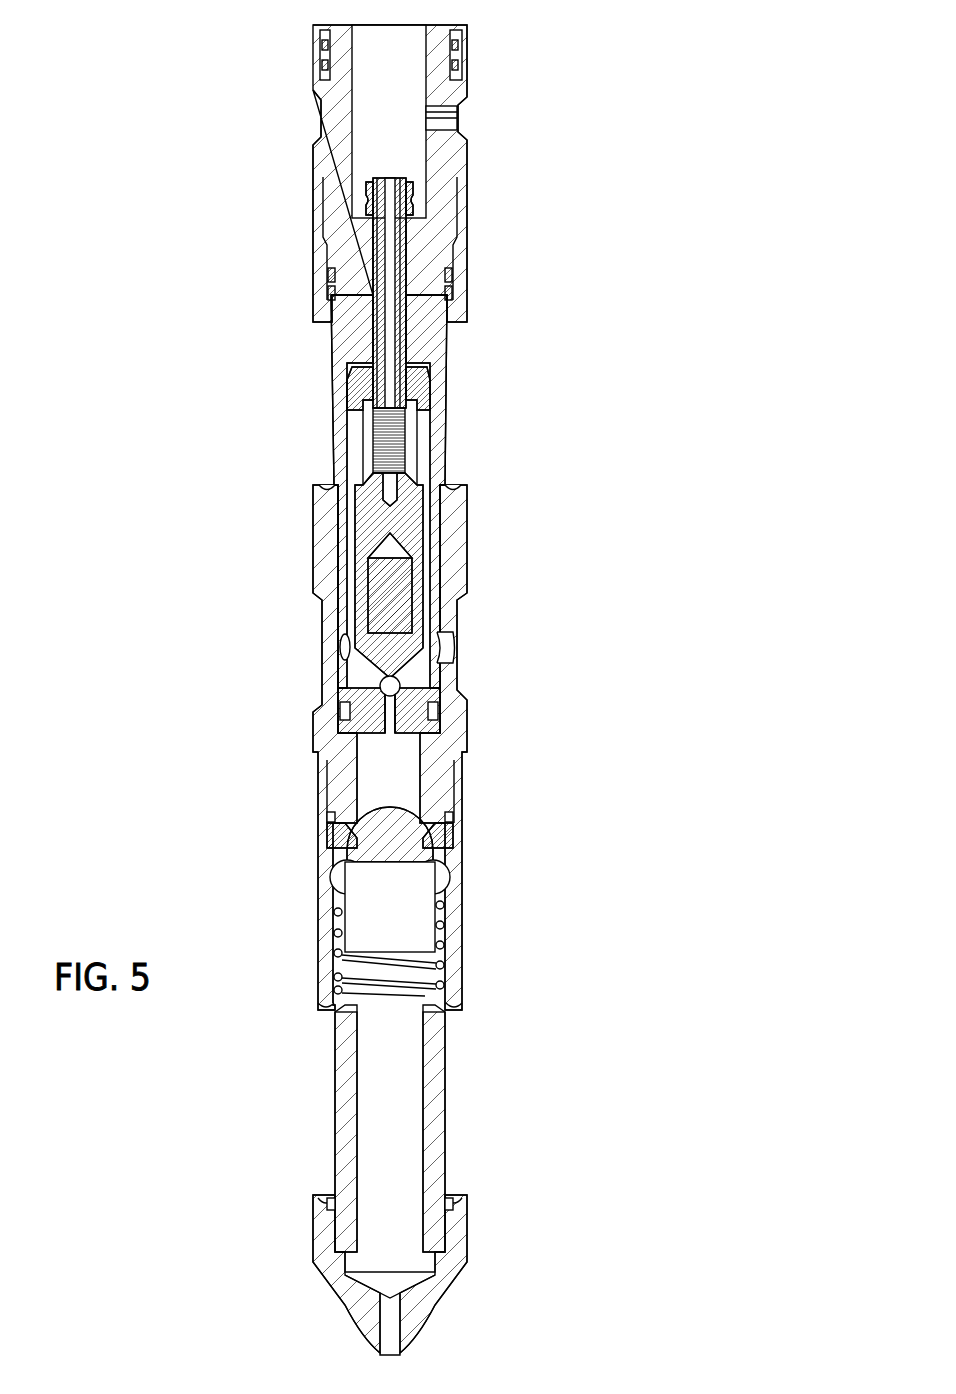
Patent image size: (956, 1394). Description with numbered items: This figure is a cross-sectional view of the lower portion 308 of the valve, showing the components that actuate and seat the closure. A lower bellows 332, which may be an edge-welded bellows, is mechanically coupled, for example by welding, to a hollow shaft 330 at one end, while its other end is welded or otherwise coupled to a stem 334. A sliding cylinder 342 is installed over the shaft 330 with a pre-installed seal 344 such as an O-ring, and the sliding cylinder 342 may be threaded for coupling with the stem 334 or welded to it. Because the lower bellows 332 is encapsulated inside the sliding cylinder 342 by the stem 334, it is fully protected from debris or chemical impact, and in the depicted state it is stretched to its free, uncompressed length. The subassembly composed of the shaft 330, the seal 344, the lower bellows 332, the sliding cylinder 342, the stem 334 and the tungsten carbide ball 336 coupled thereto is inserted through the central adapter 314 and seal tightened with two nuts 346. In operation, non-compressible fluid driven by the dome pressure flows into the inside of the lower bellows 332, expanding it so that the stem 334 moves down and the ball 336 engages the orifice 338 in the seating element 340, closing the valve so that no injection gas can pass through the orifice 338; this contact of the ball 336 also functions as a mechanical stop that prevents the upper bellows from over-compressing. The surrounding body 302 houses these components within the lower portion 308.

The lower portion 308 is at (214, 82).
The central adapter 314 is at (450, 160).
The nuts 346 is at (364, 196).
The seal 344 is at (366, 371).
The hollow shaft 330 is at (400, 347).
The lower bellows 332 is at (403, 455).
The sliding cylinder 342 is at (353, 463).
The stem 334 is at (368, 525).
The lower body 302 is at (443, 647).
The tungsten carbide ball 336 is at (385, 685).
The seating element 340 is at (412, 718).
The orifice 338 is at (390, 720).